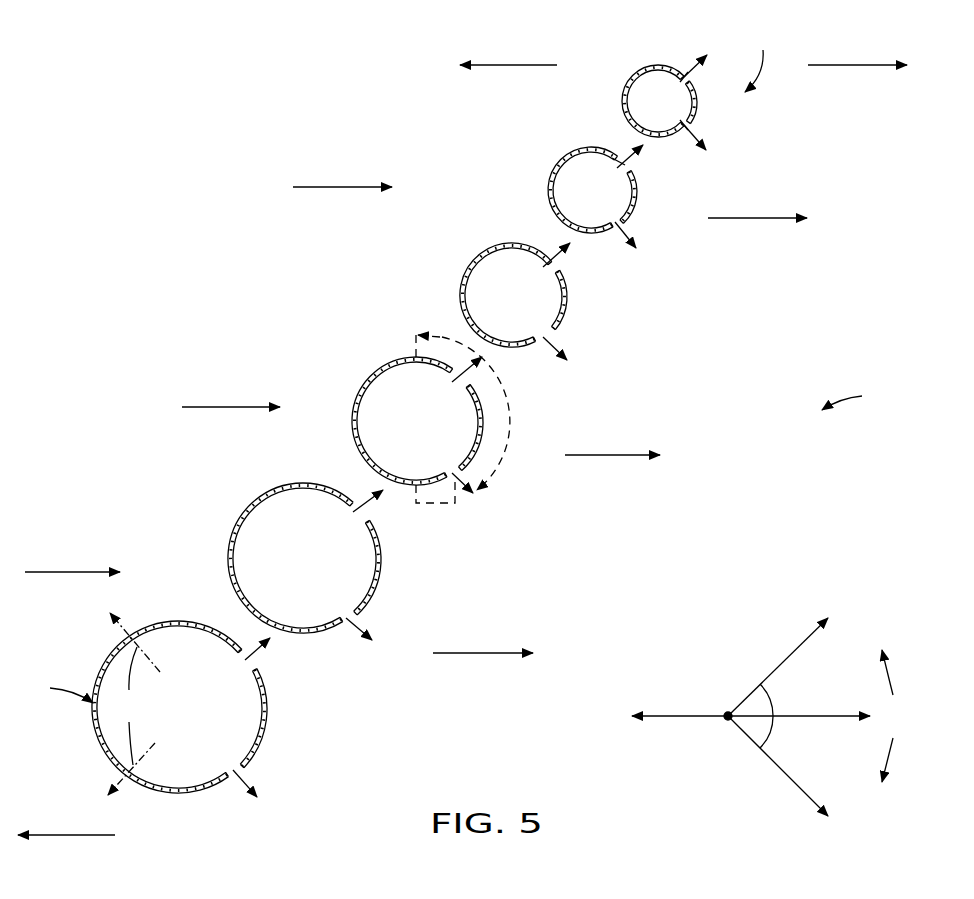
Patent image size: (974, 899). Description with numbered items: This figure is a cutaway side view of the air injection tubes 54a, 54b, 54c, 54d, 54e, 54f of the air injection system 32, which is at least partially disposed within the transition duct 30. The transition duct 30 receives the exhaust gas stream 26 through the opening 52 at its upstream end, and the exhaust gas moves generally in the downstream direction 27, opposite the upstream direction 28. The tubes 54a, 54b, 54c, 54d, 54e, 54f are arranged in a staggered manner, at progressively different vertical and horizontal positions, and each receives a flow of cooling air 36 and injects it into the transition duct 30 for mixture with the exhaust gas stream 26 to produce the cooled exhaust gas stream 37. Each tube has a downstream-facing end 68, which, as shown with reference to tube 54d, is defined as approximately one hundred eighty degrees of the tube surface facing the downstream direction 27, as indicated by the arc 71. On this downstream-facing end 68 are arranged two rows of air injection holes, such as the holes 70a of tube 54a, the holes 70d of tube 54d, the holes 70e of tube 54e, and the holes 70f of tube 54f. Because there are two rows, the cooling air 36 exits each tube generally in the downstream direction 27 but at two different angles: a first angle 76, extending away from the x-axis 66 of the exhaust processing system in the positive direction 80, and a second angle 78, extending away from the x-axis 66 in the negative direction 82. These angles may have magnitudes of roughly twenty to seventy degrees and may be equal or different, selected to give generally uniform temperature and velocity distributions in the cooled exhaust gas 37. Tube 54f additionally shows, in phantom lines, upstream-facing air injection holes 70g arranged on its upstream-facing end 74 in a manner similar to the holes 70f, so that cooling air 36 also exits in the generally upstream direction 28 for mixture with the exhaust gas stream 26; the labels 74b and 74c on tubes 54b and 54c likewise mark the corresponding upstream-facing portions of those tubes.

The exhaust gas stream 26 is at (88, 575).
The downstream direction 27 is at (848, 67).
The upstream direction 28 is at (510, 67).
The transition duct 30 is at (856, 397).
The air injection system 32 is at (760, 57).
The cooling air 36 is at (683, 122).
The cooled exhaust gas stream 37 is at (750, 220).
The opening 52 is at (72, 834).
The air injection tube 54a is at (637, 72).
The air injection tube 54b is at (573, 156).
The air injection tube 54c is at (479, 253).
The air injection tube 54d is at (372, 375).
The air injection tube 54e is at (258, 504).
The air injection tube 54f is at (161, 626).
The x-axis 66 is at (684, 716).
The downstream-facing end 68 is at (569, 302).
The air injection holes 70a is at (690, 127).
The air injection holes 70d is at (450, 483).
The air injection holes 70e is at (346, 625).
The air injection holes 70f is at (230, 780).
The upstream-facing air injection holes 70g is at (134, 704).
The arc 71 is at (510, 421).
The upstream-facing end 74 is at (56, 688).
The ring wall 74b is at (630, 169).
The ring wall 74c is at (538, 342).
The first angle 76 is at (775, 697).
The second angle 78 is at (775, 738).
The positive direction 80 is at (890, 678).
The negative direction 82 is at (890, 748).